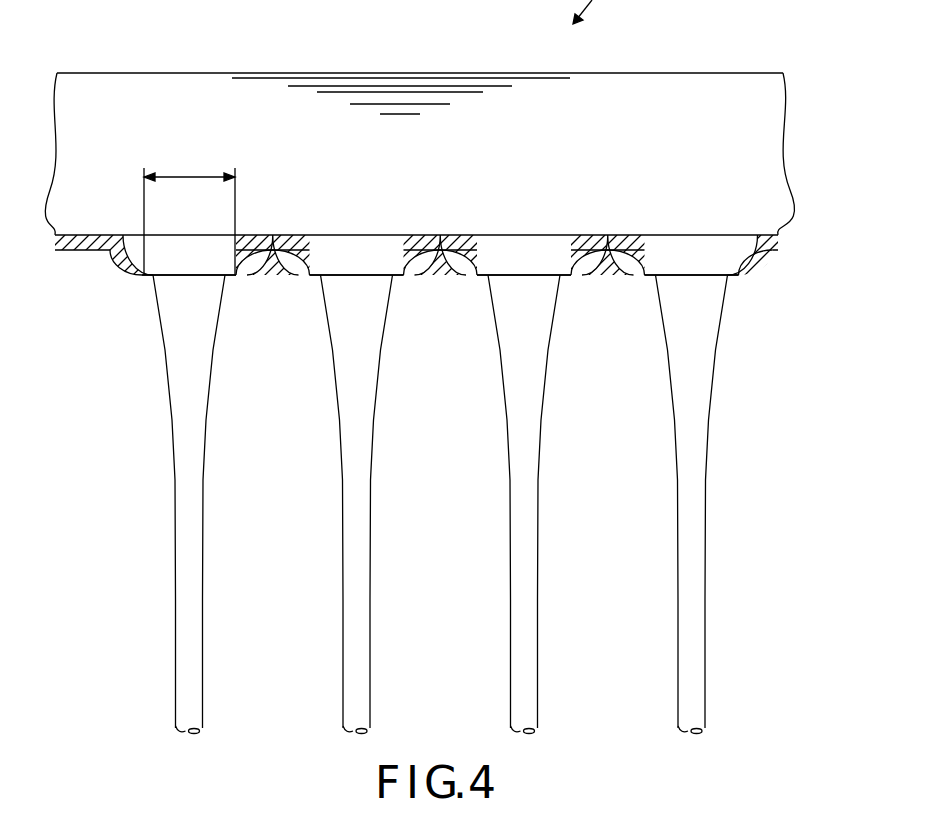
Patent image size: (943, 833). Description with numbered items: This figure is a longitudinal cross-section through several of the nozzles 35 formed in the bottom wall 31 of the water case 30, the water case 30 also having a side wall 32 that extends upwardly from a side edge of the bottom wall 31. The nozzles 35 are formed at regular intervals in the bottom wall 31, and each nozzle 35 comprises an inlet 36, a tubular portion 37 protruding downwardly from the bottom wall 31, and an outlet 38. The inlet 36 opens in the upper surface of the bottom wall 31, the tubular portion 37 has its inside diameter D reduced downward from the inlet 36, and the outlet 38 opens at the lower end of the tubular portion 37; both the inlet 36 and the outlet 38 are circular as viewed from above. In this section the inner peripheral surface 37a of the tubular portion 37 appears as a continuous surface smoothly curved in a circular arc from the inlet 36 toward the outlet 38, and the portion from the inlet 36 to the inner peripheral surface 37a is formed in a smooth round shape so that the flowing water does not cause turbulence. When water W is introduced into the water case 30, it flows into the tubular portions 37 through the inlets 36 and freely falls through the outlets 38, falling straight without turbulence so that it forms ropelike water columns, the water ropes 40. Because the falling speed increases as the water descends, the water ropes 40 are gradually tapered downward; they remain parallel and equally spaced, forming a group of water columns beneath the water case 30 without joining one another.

The water case 30 is at (711, 72).
The side wall 32 is at (760, 124).
The water W is at (440, 98).
The inside diameter D is at (178, 177).
The bottom wall 31 is at (372, 235).
The inlet 36 is at (130, 234).
The tubular portion 37 is at (137, 253).
The inner peripheral surface 37a is at (150, 262).
The outlet 38 is at (168, 277).
The nozzle 35 is at (232, 278).
The water rope 40 is at (203, 530).